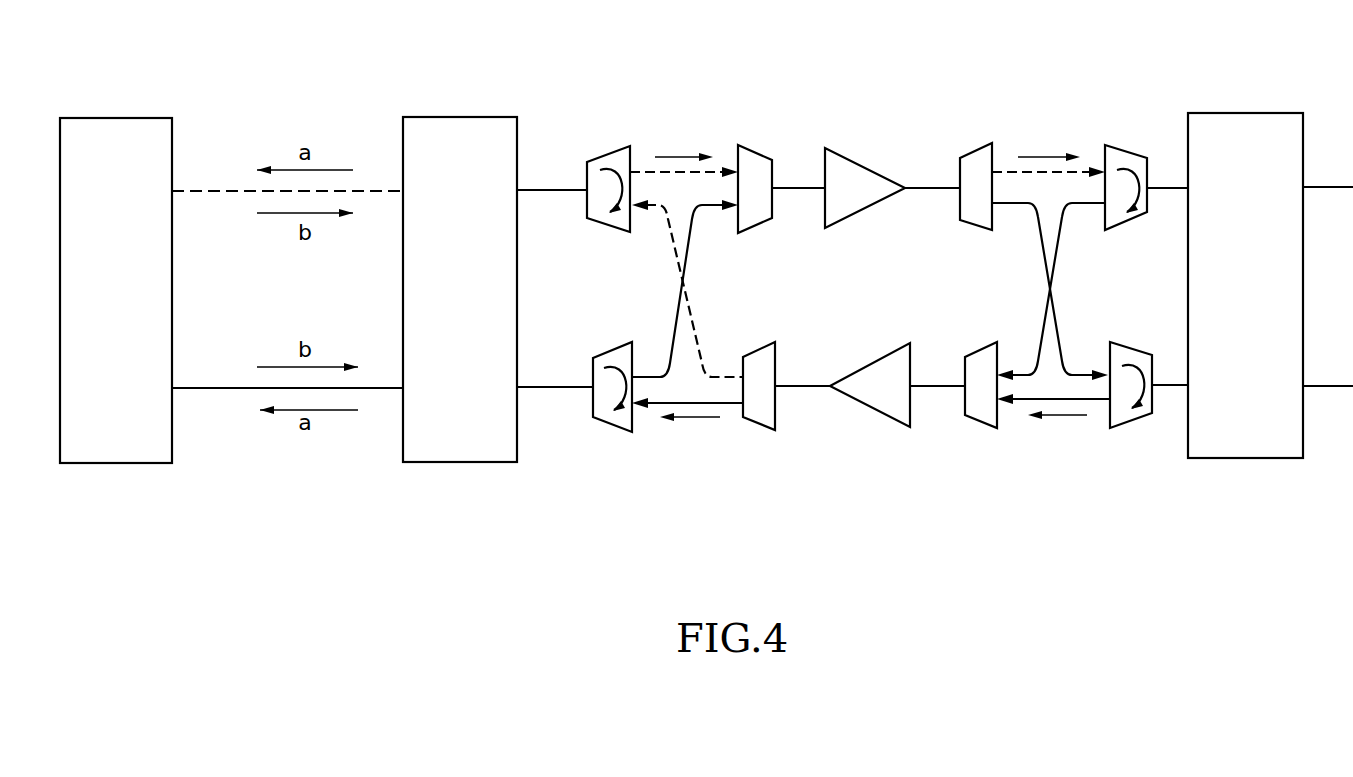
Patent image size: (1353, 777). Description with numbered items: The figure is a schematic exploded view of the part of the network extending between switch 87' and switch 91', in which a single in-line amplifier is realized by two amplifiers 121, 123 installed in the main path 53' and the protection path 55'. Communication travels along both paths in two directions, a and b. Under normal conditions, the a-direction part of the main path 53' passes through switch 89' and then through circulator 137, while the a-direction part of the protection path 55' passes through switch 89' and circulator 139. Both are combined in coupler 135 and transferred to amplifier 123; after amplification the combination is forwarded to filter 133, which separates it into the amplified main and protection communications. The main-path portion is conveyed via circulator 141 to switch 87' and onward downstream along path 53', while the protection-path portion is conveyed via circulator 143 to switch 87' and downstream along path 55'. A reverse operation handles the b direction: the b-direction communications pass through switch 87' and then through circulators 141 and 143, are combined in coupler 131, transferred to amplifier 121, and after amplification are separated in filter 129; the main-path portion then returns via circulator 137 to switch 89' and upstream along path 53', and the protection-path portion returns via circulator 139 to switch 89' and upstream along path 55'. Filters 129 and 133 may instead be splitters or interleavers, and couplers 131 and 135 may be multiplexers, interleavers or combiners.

The switch 91' is at (116, 251).
The switch 89' is at (460, 251).
The switch 87' is at (1245, 245).
The main path 53' is at (287, 153).
The protection path 55' is at (287, 429).
The circulator 137 is at (612, 148).
The circulator 139 is at (616, 426).
The circulator 141 is at (1116, 146).
The circulator 143 is at (1143, 428).
The coupler 135 is at (760, 152).
The filter 133 is at (973, 156).
The filter 129 is at (760, 430).
The coupler 131 is at (985, 422).
The amplifier 123 is at (872, 165).
The amplifier 121 is at (866, 420).